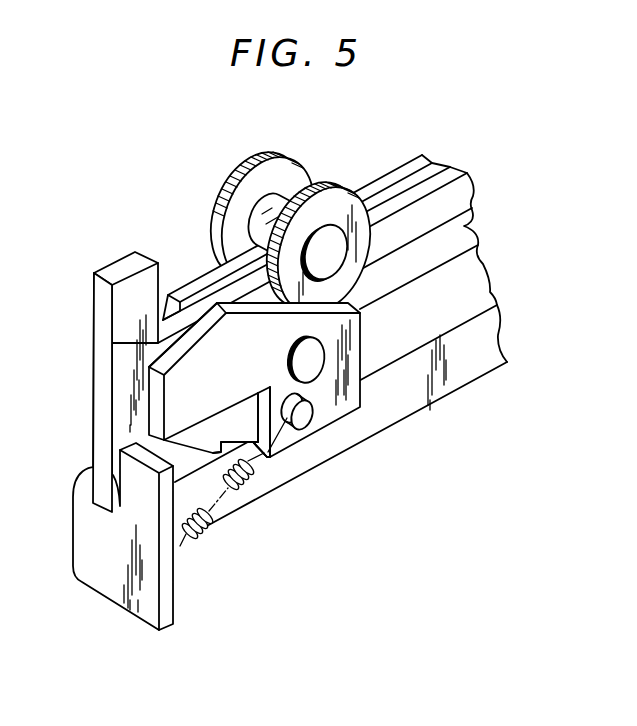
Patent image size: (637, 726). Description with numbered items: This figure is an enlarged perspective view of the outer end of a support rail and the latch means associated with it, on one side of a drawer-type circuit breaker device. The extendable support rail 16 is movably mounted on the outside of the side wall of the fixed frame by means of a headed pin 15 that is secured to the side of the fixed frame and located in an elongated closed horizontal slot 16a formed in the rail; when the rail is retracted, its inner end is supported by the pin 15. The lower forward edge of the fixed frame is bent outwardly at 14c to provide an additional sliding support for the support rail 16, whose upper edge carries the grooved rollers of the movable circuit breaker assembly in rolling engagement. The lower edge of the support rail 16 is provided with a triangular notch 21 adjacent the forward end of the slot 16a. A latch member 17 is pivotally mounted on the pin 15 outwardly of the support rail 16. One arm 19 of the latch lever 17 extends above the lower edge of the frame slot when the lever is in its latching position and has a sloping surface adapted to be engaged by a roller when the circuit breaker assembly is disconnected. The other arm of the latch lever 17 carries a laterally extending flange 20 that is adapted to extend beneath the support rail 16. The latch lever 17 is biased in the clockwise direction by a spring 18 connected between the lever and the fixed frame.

The outwardly bent lower forward edge 14c is at (114, 598).
The headed pin 15 is at (310, 376).
The extendable support rail 16 is at (96, 331).
The elongated closed horizontal slot 16a is at (467, 229).
The latch member 17 is at (262, 358).
The spring 18 is at (206, 531).
The arm of the latch lever 19 is at (203, 343).
The laterally extending flange 20 is at (267, 457).
The triangular notch 21 is at (221, 444).